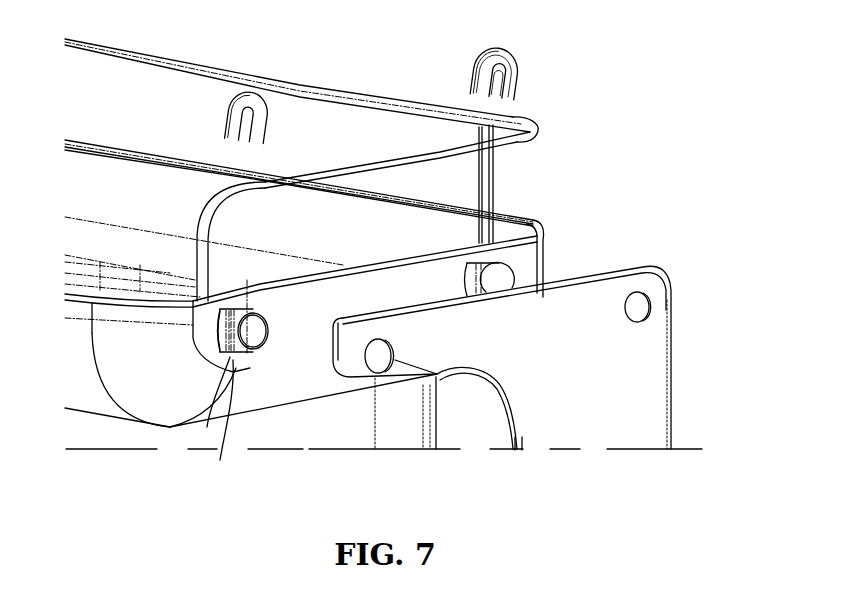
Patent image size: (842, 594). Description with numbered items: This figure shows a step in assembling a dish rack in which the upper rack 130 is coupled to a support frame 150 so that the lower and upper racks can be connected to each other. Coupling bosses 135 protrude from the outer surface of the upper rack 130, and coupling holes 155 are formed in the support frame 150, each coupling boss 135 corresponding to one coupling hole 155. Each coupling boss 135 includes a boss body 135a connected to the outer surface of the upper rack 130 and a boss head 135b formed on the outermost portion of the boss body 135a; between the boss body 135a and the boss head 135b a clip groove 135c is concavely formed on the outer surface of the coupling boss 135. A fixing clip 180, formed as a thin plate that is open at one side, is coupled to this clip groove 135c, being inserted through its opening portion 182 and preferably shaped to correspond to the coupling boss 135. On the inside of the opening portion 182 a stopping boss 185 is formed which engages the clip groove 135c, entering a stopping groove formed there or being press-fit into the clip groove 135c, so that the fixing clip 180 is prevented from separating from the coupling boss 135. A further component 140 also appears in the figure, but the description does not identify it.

The upper rack 130 is at (171, 410).
The coupling boss 135 is at (517, 268).
The boss body 135a is at (242, 360).
The boss head 135b is at (262, 360).
The clip groove 135c is at (276, 353).
The frame 140 is at (363, 92).
The support frame 150 is at (643, 430).
The coupling hole 155 is at (637, 308).
The fixing clip 180 is at (259, 93).
The opening portion 182 is at (512, 63).
The stopping boss 185 is at (491, 93).